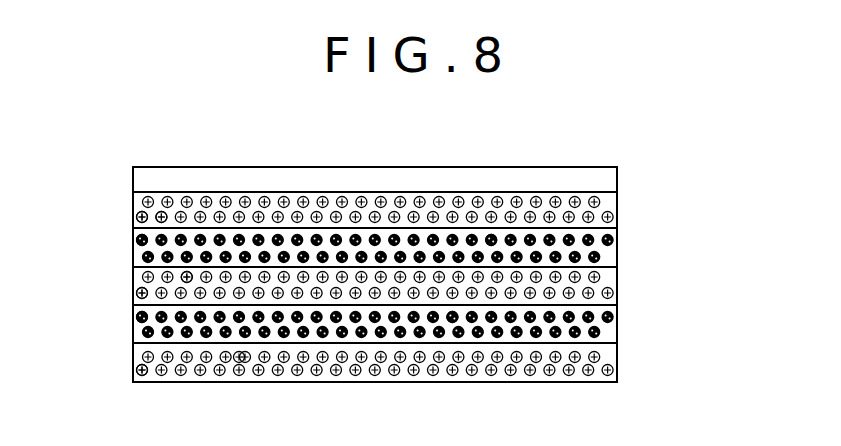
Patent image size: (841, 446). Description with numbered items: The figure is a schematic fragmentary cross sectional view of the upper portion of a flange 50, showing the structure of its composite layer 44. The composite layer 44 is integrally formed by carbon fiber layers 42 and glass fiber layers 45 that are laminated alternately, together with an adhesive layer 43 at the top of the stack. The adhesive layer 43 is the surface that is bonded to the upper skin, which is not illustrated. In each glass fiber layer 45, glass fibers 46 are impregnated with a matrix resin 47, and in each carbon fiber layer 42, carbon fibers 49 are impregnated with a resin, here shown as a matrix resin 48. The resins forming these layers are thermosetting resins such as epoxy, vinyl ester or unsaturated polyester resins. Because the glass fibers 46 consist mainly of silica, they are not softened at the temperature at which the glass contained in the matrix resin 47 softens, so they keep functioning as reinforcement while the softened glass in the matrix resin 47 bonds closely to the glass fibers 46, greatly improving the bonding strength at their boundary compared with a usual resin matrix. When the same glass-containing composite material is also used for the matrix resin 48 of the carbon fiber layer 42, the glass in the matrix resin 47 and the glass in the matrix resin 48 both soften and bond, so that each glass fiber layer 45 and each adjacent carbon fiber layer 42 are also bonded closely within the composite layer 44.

The carbon fiber layer 42 is at (618, 245).
The adhesive layer 43 is at (618, 177).
The composite layer 44 is at (688, 171).
The glass fiber layer 45 is at (618, 207).
The glass fiber 46 is at (138, 216).
The matrix resin 47 is at (237, 357).
The matrix resin 48 is at (489, 240).
The carbon fiber 49 is at (138, 238).
The flange 50 is at (346, 167).